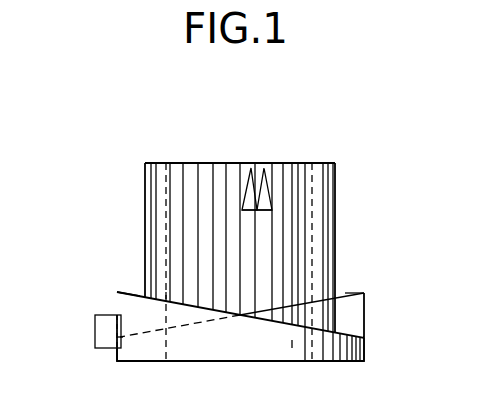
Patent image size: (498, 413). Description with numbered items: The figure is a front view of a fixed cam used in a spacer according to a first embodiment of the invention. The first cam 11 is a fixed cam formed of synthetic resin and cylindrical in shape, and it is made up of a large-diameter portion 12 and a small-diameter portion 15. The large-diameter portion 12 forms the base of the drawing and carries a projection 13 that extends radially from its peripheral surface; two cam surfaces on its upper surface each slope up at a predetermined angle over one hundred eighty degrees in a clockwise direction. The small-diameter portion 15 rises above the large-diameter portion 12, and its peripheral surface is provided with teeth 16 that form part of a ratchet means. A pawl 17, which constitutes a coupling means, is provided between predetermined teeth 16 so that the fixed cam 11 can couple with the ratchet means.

The first cam 11 is at (375, 350).
The large-diameter portion 12 is at (223, 345).
The projection 13 is at (94, 330).
The small-diameter portion 15 is at (309, 164).
The teeth 16 is at (326, 204).
The pawl 17 is at (262, 175).